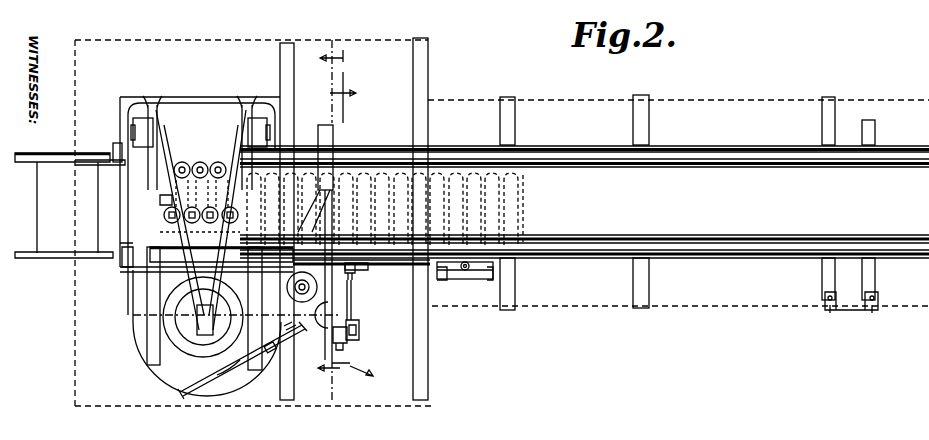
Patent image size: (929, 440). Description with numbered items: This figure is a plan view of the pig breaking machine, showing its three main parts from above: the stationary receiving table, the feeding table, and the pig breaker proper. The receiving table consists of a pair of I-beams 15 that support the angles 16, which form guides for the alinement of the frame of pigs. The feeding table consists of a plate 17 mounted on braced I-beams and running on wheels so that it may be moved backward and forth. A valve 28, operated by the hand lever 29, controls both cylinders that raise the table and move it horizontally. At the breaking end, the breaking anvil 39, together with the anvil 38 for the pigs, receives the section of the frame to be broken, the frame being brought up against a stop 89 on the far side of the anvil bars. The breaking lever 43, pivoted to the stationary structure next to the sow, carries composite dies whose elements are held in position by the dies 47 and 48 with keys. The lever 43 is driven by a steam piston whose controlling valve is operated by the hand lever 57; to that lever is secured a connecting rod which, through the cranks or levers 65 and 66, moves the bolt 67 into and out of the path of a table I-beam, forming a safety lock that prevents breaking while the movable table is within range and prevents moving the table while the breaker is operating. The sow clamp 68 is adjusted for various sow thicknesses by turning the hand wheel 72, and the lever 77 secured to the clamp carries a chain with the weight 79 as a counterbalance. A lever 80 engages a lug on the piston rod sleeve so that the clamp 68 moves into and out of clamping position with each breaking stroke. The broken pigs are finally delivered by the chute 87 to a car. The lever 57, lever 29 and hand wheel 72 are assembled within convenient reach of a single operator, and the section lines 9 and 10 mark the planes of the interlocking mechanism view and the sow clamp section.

The chute 87 is at (45, 222).
The stop 89 is at (178, 200).
The breaking anvil 39 is at (168, 198).
The anvil 38 is at (167, 246).
The die 47 is at (180, 225).
The breaking lever 43 is at (197, 288).
The die 48 is at (209, 160).
The crank 65 is at (200, 363).
The hand lever 57 is at (218, 375).
The hand wheel 72 is at (289, 328).
The lever 80 is at (292, 297).
The section line 10— 10 is at (340, 220).
The section line 9— 9 is at (351, 234).
The sow clamp 68 is at (330, 137).
The hand lever 29 is at (360, 269).
The bolt 67 is at (356, 275).
The lever 77 is at (330, 289).
The weight 79 is at (331, 317).
The crank 66 is at (349, 344).
The valve 28 is at (442, 280).
The angles 16 is at (701, 133).
The I-beams 15 is at (754, 133).
The plate 17 is at (489, 209).